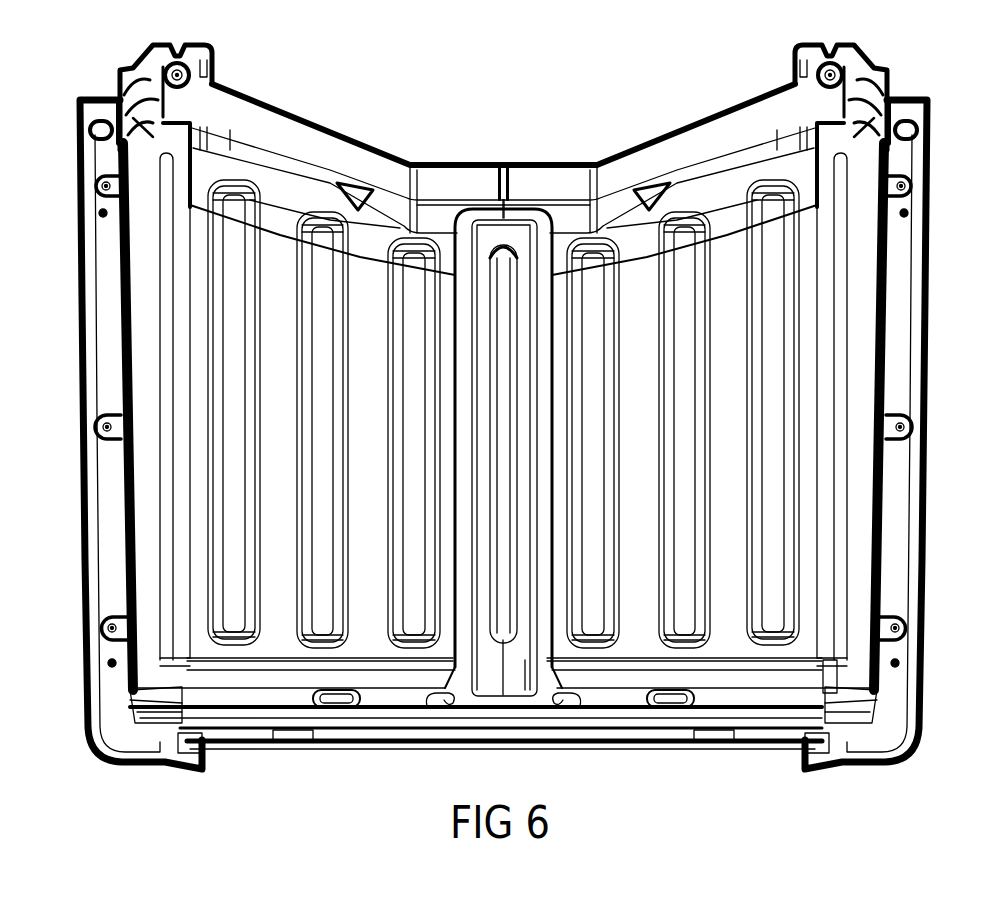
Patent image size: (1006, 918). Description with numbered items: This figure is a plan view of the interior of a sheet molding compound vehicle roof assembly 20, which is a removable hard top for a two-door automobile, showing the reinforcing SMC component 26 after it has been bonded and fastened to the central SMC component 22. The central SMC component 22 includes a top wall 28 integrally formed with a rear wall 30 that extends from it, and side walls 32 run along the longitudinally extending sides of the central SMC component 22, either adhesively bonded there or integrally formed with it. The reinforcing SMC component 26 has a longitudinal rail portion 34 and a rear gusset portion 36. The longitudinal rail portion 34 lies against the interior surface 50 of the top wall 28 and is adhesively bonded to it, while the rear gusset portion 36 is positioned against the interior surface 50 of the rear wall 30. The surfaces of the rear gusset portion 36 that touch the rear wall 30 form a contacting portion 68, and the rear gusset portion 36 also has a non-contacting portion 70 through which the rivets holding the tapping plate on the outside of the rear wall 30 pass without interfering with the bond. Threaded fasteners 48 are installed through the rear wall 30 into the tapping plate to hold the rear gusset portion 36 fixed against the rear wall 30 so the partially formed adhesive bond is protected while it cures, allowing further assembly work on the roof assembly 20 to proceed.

The SMC vehicle roof assembly 20 is at (733, 773).
The central SMC component 22 is at (735, 693).
The reinforcing SMC component 26 is at (552, 457).
The top wall 28 is at (734, 267).
The rear wall 30 is at (627, 698).
The side walls 32 is at (98, 538).
The longitudinal rail portion 34 is at (470, 518).
The rear gusset portion 36 is at (467, 697).
The threaded fasteners 48 is at (443, 700).
The interior surface 50 is at (654, 530).
The contacting portion 68 is at (535, 692).
The non-contacting portion 70 is at (495, 683).